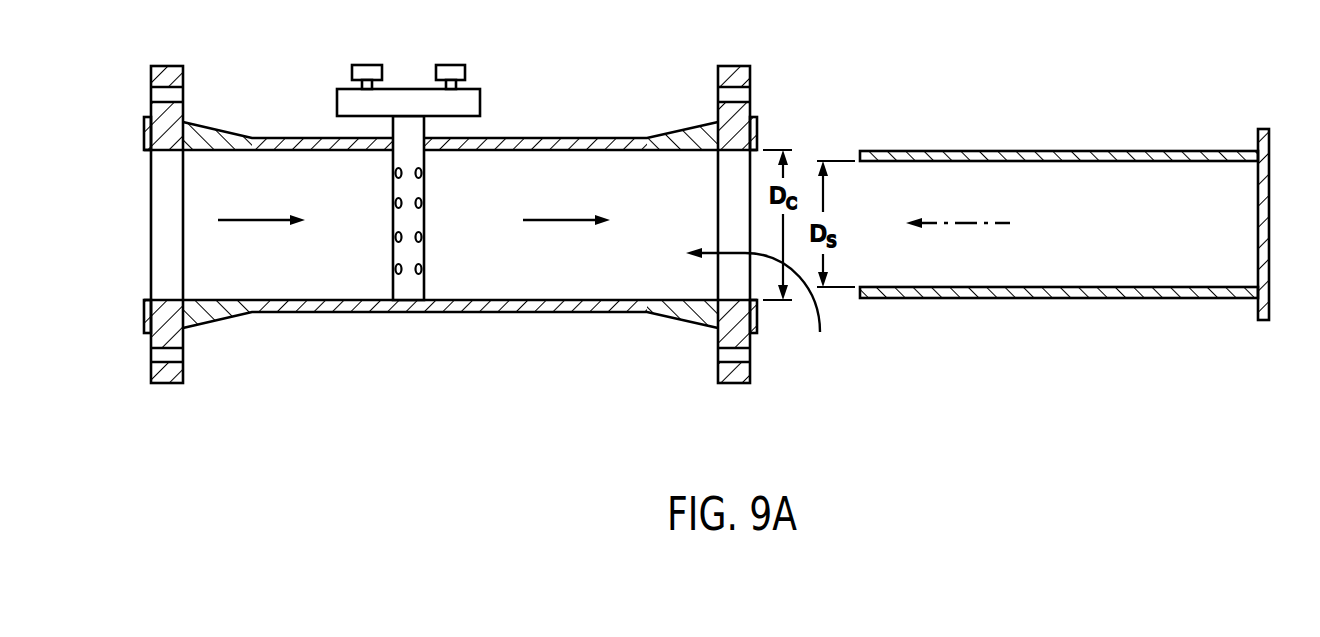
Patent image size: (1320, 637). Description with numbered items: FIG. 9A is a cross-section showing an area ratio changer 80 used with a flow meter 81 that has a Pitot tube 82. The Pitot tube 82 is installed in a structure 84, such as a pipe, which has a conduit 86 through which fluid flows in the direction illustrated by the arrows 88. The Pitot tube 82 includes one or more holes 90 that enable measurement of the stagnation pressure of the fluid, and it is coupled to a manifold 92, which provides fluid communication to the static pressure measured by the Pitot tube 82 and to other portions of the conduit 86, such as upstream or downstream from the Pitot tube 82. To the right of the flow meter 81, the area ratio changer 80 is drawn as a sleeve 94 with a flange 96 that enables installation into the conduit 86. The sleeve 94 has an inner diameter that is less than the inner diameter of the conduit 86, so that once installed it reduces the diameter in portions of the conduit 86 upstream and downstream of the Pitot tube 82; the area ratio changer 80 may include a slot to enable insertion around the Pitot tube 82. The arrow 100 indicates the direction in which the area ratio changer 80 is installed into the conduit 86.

The area ratio changer 80 is at (1064, 190).
The flow meter 81 is at (450, 216).
The Pitot tube 82 is at (393, 163).
The structure 84 is at (560, 137).
The conduit 86 is at (760, 308).
The arrows 88 is at (260, 217).
The holes 90 is at (393, 175).
The manifold 92 is at (407, 88).
The sleeve 94 is at (1117, 150).
The flange 96 is at (1257, 140).
The arrow 100 is at (957, 226).